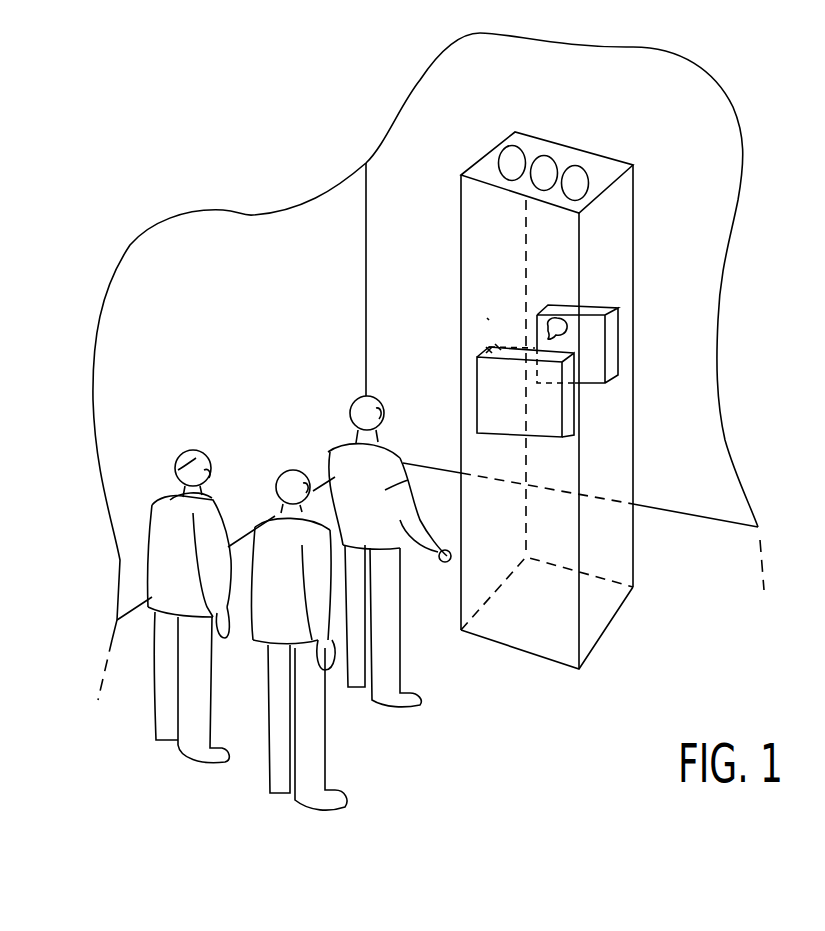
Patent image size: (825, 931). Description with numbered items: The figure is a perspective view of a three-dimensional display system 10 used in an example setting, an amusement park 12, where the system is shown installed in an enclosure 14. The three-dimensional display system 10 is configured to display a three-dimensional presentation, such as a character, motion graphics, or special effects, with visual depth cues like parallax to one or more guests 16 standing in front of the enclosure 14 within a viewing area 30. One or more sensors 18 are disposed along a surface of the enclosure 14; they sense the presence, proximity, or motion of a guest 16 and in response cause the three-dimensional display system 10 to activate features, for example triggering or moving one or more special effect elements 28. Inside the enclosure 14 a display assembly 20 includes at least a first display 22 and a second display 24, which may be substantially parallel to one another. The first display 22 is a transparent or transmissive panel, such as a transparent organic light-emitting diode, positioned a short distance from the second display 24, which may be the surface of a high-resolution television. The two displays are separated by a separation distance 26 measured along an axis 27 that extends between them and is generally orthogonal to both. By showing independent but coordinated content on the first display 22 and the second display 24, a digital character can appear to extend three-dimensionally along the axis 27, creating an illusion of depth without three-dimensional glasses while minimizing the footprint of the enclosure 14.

The three-dimensional display system 10 is at (488, 318).
The amusement park 12 is at (300, 164).
The enclosure 14 is at (641, 185).
The guests 16 is at (399, 418).
The sensors 18 is at (522, 150).
The display assembly 20 is at (649, 318).
The first display 22 is at (487, 352).
The second display 24 is at (605, 304).
The separation distance 26 is at (513, 334).
The axis 27 is at (543, 307).
The special effect elements 28 is at (547, 305).
The viewing area 30 is at (400, 768).